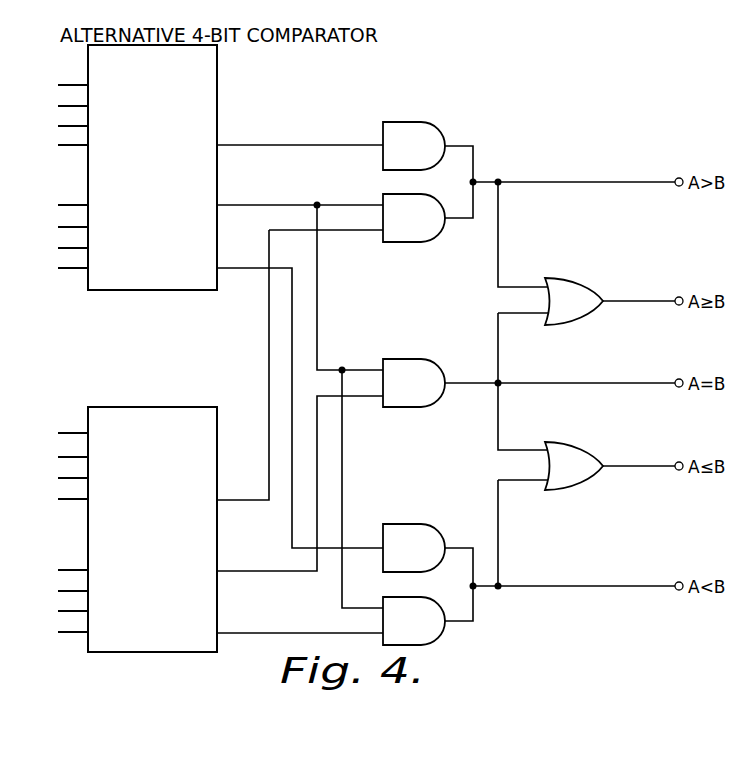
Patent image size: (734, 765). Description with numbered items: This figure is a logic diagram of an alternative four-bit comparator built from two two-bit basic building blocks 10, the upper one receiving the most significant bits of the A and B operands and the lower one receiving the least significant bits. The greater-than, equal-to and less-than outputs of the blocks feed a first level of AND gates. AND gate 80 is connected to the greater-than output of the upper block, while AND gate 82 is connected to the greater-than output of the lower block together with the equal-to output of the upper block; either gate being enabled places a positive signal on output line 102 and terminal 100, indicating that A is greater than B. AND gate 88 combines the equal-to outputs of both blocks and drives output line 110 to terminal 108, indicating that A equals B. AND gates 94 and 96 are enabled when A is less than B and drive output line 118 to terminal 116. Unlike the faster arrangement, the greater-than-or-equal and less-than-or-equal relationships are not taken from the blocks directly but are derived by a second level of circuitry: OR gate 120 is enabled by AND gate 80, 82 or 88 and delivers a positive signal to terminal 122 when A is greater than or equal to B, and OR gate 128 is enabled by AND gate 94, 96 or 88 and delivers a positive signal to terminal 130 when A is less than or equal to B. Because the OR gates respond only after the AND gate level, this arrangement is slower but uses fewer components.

The basic building block 10 is at (137, 347).
The AND gate 80 is at (414, 146).
The AND gate 82 is at (414, 218).
The AND gate 88 is at (414, 383).
The AND gate 94 is at (414, 548).
The AND gate 96 is at (414, 621).
The terminal 100 is at (676, 178).
The output line 102 is at (535, 182).
The terminal 108 is at (677, 378).
The output line 110 is at (603, 383).
The terminal 116 is at (677, 582).
The output line 118 is at (569, 583).
The OR gate 120 is at (574, 301).
The terminal 122 is at (677, 297).
The OR gate 128 is at (574, 466).
The terminal 130 is at (677, 461).